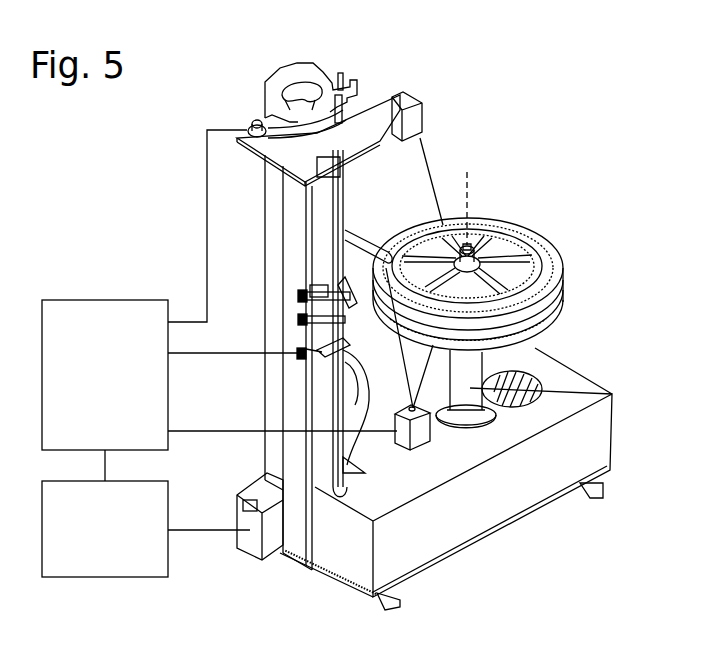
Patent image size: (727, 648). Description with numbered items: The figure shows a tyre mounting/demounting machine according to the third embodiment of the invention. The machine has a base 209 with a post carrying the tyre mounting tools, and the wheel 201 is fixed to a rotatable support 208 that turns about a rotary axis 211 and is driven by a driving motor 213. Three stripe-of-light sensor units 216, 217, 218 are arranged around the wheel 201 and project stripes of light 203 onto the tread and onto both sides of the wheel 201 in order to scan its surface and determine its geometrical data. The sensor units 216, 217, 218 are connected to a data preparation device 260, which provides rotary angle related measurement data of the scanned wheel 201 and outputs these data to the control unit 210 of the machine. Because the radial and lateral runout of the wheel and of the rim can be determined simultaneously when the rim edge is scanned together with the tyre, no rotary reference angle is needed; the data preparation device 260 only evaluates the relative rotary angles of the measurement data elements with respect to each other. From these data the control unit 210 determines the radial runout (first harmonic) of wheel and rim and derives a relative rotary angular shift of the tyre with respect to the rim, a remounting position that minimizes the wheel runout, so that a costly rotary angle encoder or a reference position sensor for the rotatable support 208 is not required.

The wheel 201 is at (520, 210).
The stripes of light 203 is at (405, 210).
The rotatable support 208 is at (612, 394).
The base 209 is at (588, 333).
The control unit 210 is at (147, 573).
The rotary axis 211 is at (470, 183).
The driving motor 213 is at (493, 418).
The sensor unit 216 is at (423, 103).
The sensor unit 217 is at (403, 140).
The sensor unit 218 is at (418, 447).
The data preparation device 260 is at (107, 308).